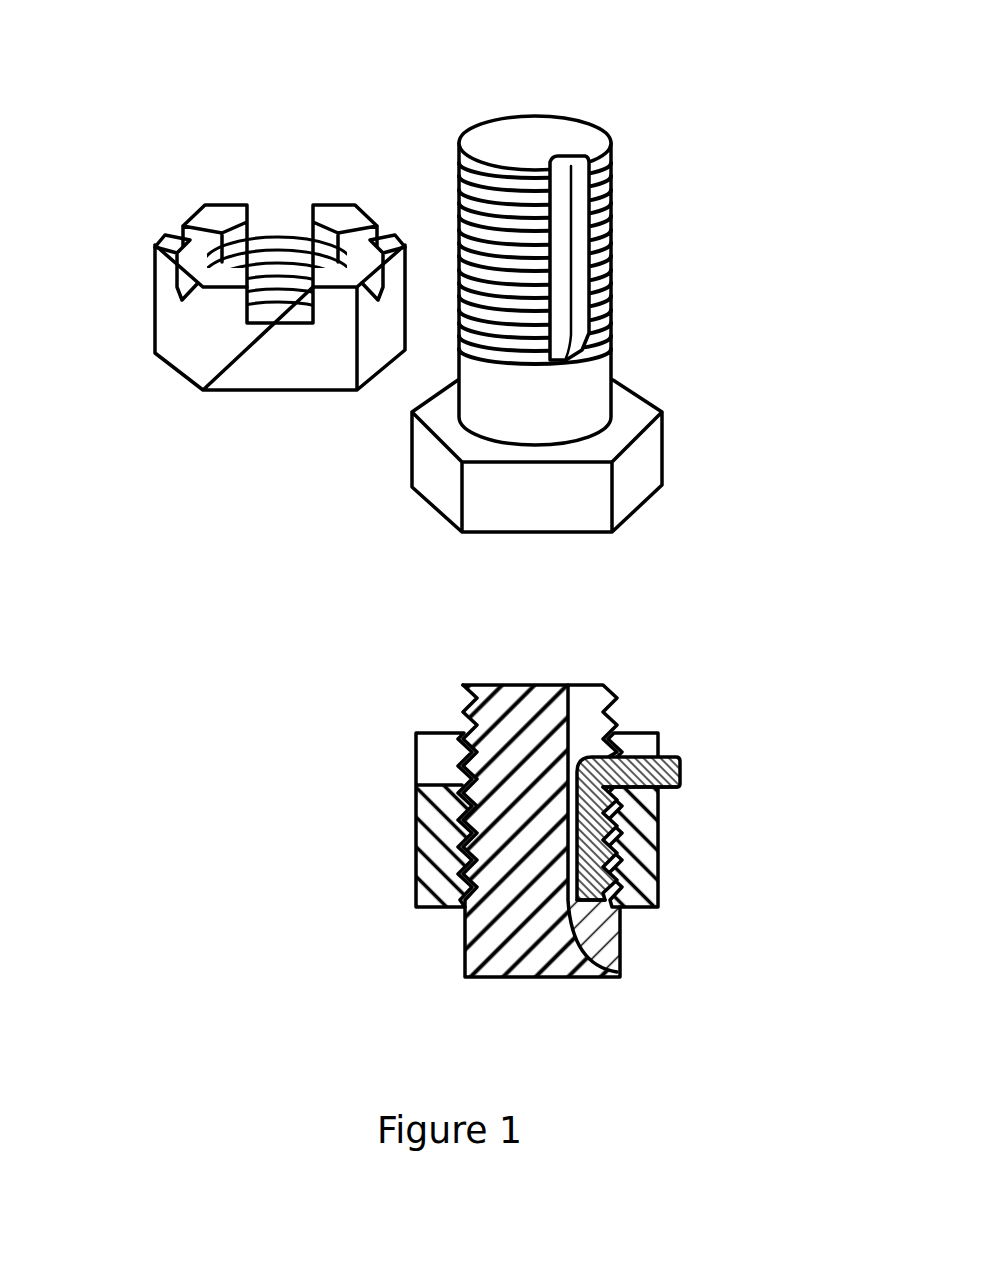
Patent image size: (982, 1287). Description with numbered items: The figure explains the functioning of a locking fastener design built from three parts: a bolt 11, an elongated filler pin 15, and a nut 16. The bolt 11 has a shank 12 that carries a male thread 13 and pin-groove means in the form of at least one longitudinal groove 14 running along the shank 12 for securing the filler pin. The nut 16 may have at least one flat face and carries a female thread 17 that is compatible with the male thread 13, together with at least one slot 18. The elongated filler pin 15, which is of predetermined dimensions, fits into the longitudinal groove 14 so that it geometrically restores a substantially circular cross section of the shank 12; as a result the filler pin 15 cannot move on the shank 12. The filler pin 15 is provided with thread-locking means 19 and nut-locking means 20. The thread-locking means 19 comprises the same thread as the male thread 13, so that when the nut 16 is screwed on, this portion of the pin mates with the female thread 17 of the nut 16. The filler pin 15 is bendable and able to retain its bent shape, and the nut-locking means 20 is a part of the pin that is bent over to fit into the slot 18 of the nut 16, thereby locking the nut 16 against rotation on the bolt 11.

The bolt 11 is at (412, 460).
The shank 12 is at (532, 402).
The male thread 13 is at (614, 288).
The longitudinal groove 14 is at (562, 177).
The elongated filler pin 15 is at (607, 773).
The nut 16 is at (413, 785).
The female thread 17 is at (262, 272).
The slot 18 is at (275, 218).
The thread-locking means 19 is at (622, 908).
The nut-locking means 20 is at (668, 788).